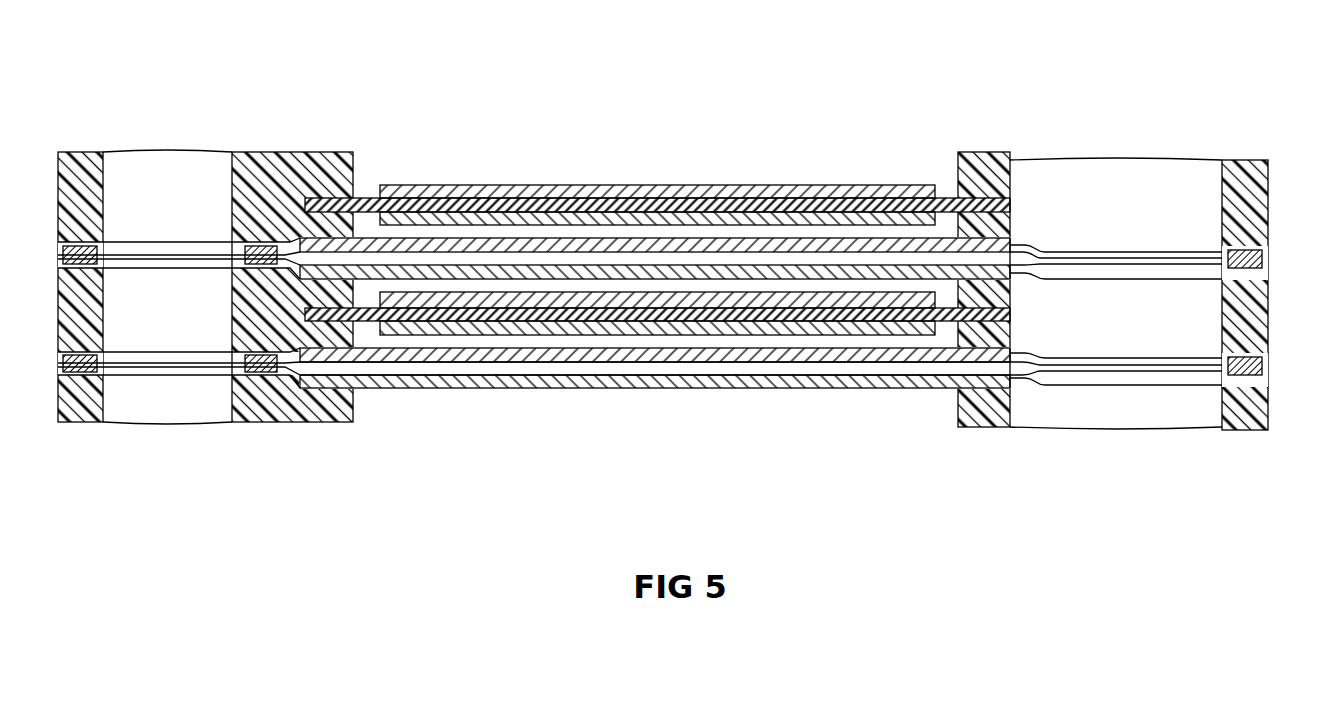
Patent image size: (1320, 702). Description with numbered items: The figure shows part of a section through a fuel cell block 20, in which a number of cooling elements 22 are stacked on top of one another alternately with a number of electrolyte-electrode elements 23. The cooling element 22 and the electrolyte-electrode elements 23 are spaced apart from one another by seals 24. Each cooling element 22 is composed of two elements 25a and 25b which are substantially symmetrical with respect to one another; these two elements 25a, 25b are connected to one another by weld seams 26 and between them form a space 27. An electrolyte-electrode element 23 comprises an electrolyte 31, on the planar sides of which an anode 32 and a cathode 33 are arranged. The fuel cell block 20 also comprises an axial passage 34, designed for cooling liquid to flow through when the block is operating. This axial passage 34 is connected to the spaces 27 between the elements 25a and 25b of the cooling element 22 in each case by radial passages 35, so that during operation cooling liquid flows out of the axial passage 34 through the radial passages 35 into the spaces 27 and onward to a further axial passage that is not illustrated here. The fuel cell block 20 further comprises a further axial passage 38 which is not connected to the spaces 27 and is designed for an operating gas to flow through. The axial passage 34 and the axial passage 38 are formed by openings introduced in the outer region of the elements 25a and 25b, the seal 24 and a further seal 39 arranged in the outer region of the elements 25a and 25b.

The fuel cell block 20 is at (802, 77).
The cooling element 22 is at (430, 372).
The electrolyte-electrode element 23 is at (657, 280).
The seal 24 is at (310, 160).
The element 25a is at (570, 352).
The element 25b is at (680, 387).
The weld seam 26 is at (255, 248).
The space 27 is at (715, 262).
The electrolyte 31 is at (478, 203).
The anode 32 is at (545, 195).
The cathode 33 is at (605, 215).
The axial passage 34 is at (1135, 182).
The radial passage 35 is at (1028, 250).
The further axial passage 38 is at (178, 403).
The further seal 39 is at (75, 165).